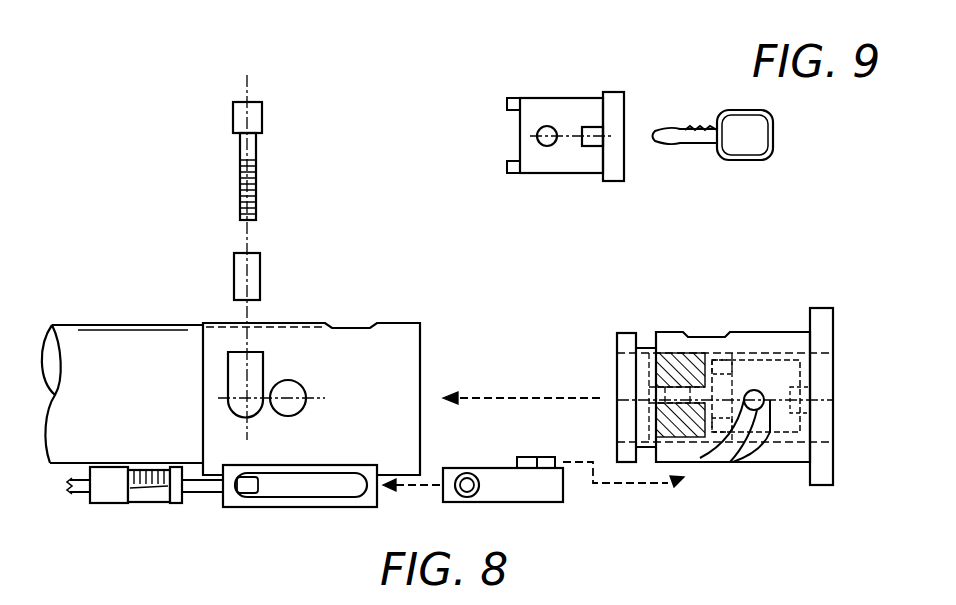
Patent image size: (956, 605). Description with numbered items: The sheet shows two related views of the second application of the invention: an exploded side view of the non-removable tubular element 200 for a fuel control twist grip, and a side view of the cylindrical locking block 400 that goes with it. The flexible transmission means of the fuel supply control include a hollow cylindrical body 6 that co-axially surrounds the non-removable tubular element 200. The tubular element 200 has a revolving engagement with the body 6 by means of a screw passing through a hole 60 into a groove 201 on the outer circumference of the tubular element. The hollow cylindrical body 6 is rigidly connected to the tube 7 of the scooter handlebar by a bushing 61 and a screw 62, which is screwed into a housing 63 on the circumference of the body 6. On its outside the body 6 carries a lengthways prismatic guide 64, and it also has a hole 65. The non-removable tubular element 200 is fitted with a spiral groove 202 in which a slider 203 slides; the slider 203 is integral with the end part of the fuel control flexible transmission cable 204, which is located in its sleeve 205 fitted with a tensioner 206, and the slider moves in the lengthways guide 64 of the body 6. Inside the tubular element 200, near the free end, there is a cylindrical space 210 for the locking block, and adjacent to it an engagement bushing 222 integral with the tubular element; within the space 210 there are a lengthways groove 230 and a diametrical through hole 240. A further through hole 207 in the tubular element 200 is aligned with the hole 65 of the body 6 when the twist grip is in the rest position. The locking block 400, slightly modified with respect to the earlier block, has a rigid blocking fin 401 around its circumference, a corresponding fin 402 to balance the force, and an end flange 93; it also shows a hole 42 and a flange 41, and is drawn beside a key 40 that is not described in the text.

In FIG. 8, the hollow cylindrical body 6 is at (400, 318).
In FIG. 8, the tube 7 is at (135, 362).
In FIG. 8, the hole 60 is at (285, 392).
In FIG. 8, the bushing 61 is at (237, 245).
In FIG. 8, the screw 62 is at (243, 118).
In FIG. 8, the housing 63 is at (240, 385).
In FIG. 8, the lengthways prismatic guide 64 is at (277, 500).
In FIG. 8, the hole 65 is at (345, 325).
In FIG. 8, the non-removable tubular element 200 is at (782, 322).
In FIG. 8, the groove 201 is at (645, 345).
In FIG. 8, the spiral groove 202 is at (735, 450).
In FIG. 8, the slider 203 is at (538, 480).
In FIG. 8, the fuel control flexible transmission cable 204 is at (72, 486).
In FIG. 8, the sleeve 205 is at (102, 488).
In FIG. 8, the tensioner 206 is at (160, 503).
In FIG. 8, the through hole 207 is at (715, 335).
In FIG. 8, the cylindrical space 210 is at (616, 362).
In FIG. 8, the engagement bushing 222 is at (686, 358).
In FIG. 8, the lengthways groove 230 is at (800, 435).
In FIG. 8, the diametrical through hole 240 is at (753, 410).
In FIG. 9, the key 40 is at (750, 118).
In FIG. 9, the flange 41 is at (591, 133).
In FIG. 9, the hole 42 is at (547, 132).
In FIG. 9, the end flange 93 is at (607, 120).
In FIG. 9, the locking block 400 is at (528, 90).
In FIG. 9, the rigid blocking fin 401 is at (507, 102).
In FIG. 9, the fin 402 is at (507, 168).